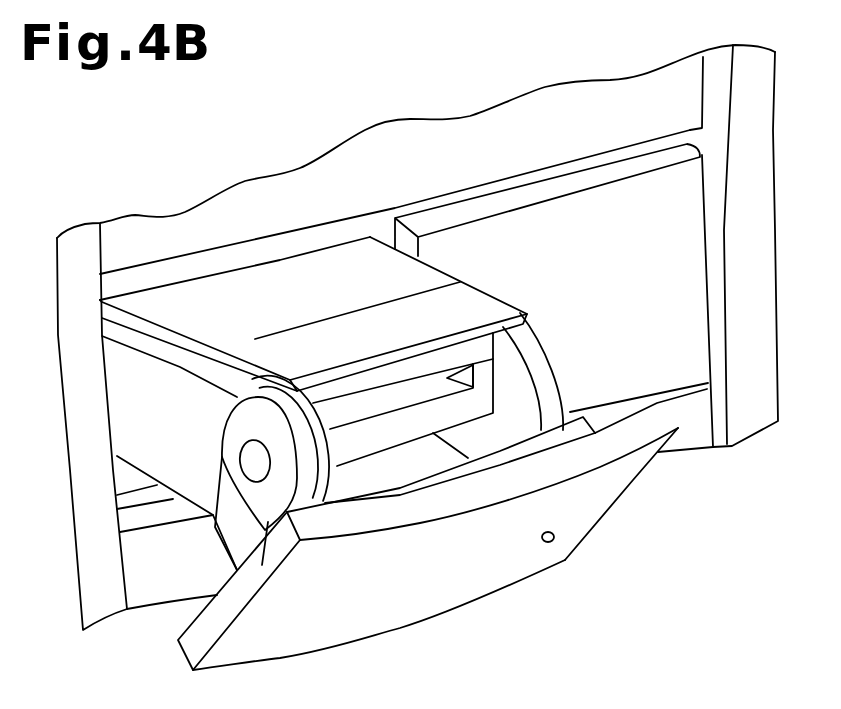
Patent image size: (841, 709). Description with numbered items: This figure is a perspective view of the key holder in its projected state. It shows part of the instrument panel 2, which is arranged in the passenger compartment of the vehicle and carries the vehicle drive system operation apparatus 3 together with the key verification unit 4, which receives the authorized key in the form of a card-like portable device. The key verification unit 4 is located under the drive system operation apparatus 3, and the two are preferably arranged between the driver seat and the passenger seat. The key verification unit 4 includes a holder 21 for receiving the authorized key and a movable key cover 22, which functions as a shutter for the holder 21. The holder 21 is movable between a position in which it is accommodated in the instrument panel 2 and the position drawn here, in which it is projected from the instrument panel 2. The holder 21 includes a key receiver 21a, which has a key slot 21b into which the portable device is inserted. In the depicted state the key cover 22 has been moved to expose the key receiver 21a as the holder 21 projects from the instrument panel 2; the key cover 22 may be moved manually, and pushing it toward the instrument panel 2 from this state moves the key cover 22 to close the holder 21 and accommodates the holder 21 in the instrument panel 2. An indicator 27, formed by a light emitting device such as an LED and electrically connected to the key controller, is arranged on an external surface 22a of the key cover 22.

The instrument panel 2 is at (237, 160).
The vehicle drive system operation apparatus 3 is at (553, 84).
The key verification unit 4 is at (266, 290).
The holder 21 is at (435, 268).
The key receiver 21a is at (383, 368).
The key slot 21b is at (483, 376).
The key cover 22 is at (637, 430).
The external surface 22a is at (597, 502).
The indicator 27 is at (551, 542).